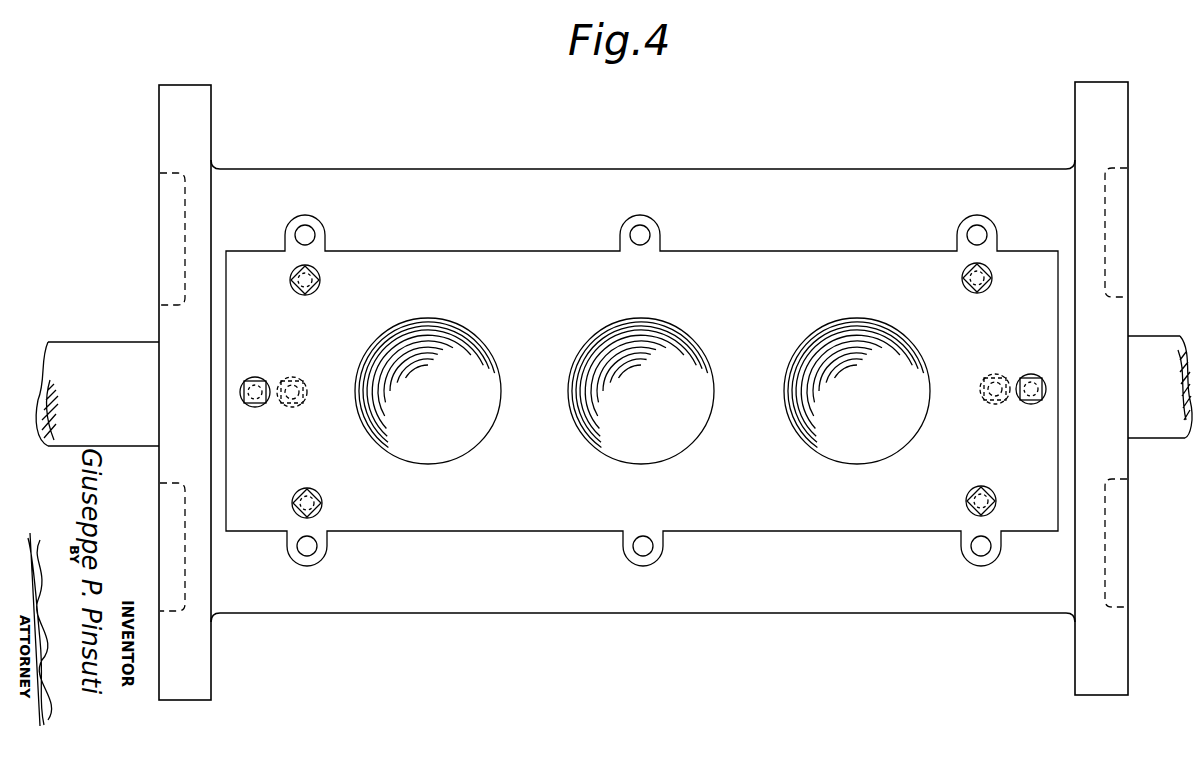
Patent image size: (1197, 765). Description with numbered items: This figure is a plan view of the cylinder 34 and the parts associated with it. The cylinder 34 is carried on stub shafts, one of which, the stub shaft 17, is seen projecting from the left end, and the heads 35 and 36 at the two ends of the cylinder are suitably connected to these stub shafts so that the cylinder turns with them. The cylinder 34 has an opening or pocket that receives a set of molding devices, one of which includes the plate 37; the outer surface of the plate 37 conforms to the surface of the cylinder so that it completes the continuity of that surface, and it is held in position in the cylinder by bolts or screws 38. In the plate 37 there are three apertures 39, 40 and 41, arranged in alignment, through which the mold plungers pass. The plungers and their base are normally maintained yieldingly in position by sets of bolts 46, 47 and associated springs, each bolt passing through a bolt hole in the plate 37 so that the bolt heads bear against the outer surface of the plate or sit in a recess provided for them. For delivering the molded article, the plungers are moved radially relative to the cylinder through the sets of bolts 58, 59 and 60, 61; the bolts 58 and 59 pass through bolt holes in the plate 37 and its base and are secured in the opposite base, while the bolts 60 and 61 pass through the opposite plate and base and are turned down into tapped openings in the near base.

The stub shaft 17 is at (60, 354).
The cylinder 34 is at (705, 183).
The cylinder head 35 is at (170, 120).
The cylinder head 36 is at (1100, 132).
The plate 37 is at (766, 262).
The bolts or screws 38 is at (638, 238).
The aperture 39 is at (480, 410).
The aperture 40 is at (697, 413).
The aperture 41 is at (905, 405).
The bolts 46 is at (320, 280).
The bolts 47 is at (992, 278).
The bolt 58 is at (257, 384).
The bolt 59 is at (1031, 380).
The bolt 60 is at (290, 410).
The bolt 61 is at (985, 380).